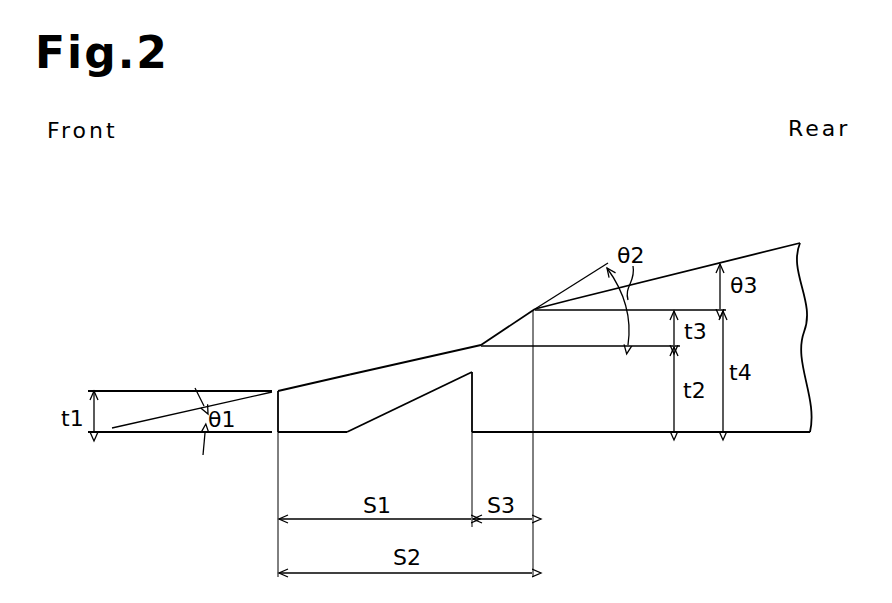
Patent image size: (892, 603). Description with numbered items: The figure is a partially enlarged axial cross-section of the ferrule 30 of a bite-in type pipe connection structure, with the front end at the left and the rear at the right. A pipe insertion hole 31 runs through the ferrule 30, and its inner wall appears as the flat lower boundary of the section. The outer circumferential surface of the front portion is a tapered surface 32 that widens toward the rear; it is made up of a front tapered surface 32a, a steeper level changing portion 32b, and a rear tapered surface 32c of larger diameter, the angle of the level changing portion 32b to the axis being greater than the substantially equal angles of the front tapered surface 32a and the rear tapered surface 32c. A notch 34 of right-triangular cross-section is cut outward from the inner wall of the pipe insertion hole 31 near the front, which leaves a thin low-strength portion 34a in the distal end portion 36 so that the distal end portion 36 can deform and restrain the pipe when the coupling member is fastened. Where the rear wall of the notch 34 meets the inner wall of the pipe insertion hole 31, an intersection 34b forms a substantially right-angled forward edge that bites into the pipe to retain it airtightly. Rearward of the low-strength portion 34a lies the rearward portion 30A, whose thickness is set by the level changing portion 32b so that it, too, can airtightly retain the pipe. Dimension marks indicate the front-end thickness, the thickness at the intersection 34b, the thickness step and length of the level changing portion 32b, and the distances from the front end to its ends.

The ferrule 30 is at (727, 250).
The rearward portion 30A is at (575, 418).
The pipe insertion hole 31 is at (636, 434).
The tapered surface 32 is at (461, 294).
The front tapered surface 32a is at (395, 363).
The level changing portion 32b is at (497, 333).
The rear tapered surface 32c is at (566, 294).
The notch 34 is at (405, 420).
The low-strength portion 34a is at (377, 392).
The intersection 34b is at (470, 432).
The distal end portion 36 is at (315, 385).